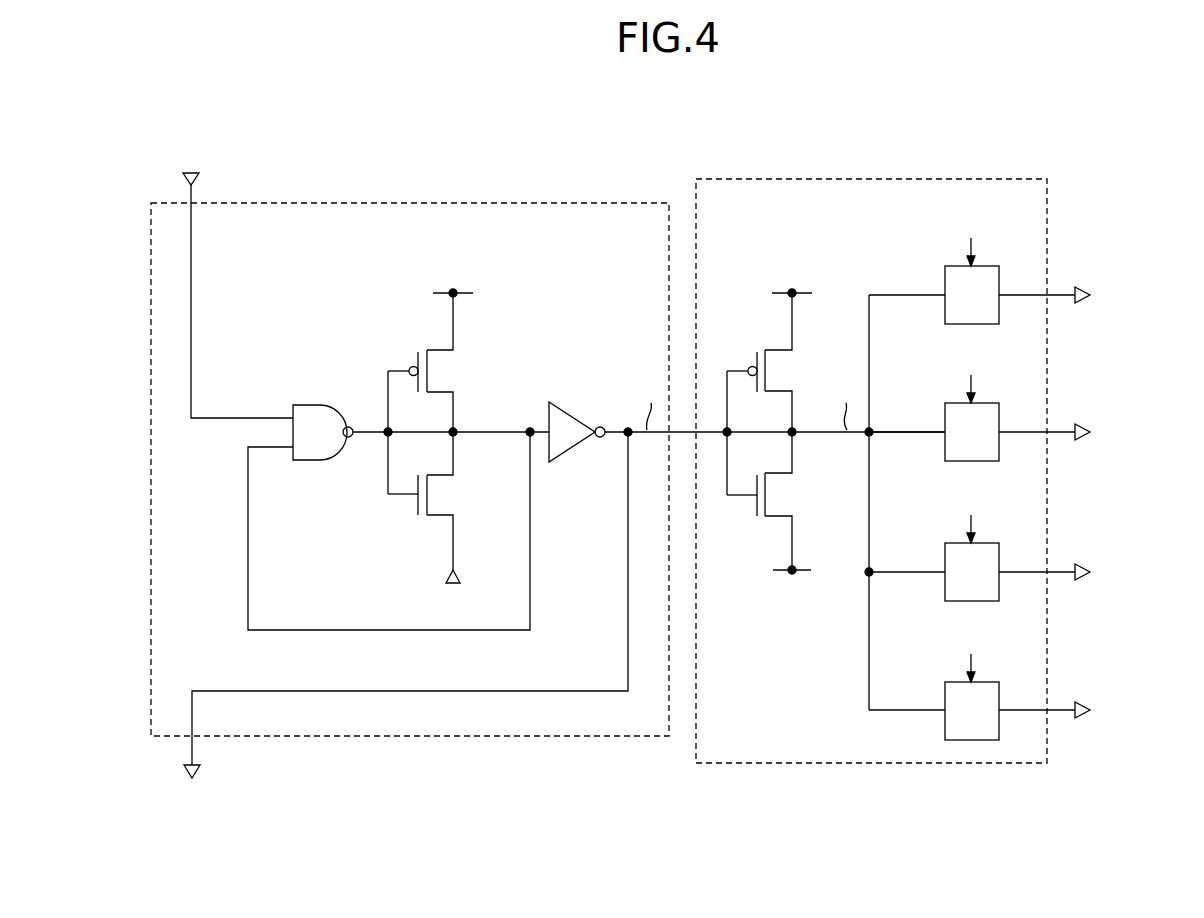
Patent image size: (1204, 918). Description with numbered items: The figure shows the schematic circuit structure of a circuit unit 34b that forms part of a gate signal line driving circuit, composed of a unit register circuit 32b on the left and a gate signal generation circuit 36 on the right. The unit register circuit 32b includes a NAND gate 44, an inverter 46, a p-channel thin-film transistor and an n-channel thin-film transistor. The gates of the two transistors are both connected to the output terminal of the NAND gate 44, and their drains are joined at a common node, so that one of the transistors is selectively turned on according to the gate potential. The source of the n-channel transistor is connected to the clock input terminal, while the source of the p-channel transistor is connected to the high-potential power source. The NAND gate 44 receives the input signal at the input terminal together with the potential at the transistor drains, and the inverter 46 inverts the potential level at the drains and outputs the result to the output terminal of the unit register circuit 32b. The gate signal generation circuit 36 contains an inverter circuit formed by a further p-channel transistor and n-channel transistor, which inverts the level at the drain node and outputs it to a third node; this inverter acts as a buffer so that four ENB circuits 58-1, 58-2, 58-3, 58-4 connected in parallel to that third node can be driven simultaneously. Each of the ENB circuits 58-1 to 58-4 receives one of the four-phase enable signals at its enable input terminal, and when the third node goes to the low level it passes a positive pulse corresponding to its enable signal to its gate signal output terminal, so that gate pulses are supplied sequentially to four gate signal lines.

The unit register circuit 32b is at (630, 200).
The circuit unit 34b is at (1100, 165).
The gate signal generation circuit 36 is at (1007, 177).
The NAND gate 44 is at (312, 405).
The inverter 46 is at (572, 413).
The ENB circuit 58-1 is at (944, 281).
The ENB circuit 58-2 is at (944, 419).
The ENB circuit 58-3 is at (944, 558).
The ENB circuit 58-4 is at (944, 697).